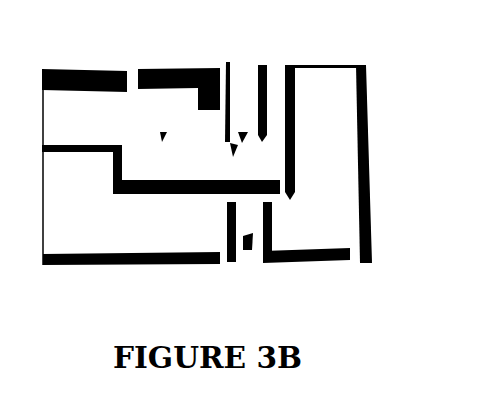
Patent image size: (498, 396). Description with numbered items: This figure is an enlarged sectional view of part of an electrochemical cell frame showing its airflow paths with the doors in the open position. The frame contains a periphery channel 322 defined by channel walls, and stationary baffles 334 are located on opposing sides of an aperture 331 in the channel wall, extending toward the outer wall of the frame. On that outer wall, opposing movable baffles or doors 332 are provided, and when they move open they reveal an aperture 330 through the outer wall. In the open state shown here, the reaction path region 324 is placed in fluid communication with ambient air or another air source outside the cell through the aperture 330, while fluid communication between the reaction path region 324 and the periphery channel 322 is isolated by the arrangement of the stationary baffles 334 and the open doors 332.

The periphery channel 322 is at (90, 209).
The reaction path region 324 is at (173, 170).
The aperture 330 is at (247, 240).
The aperture 331 is at (250, 183).
The movable baffles or doors 332 is at (220, 256).
The stationary baffles 334 is at (220, 231).